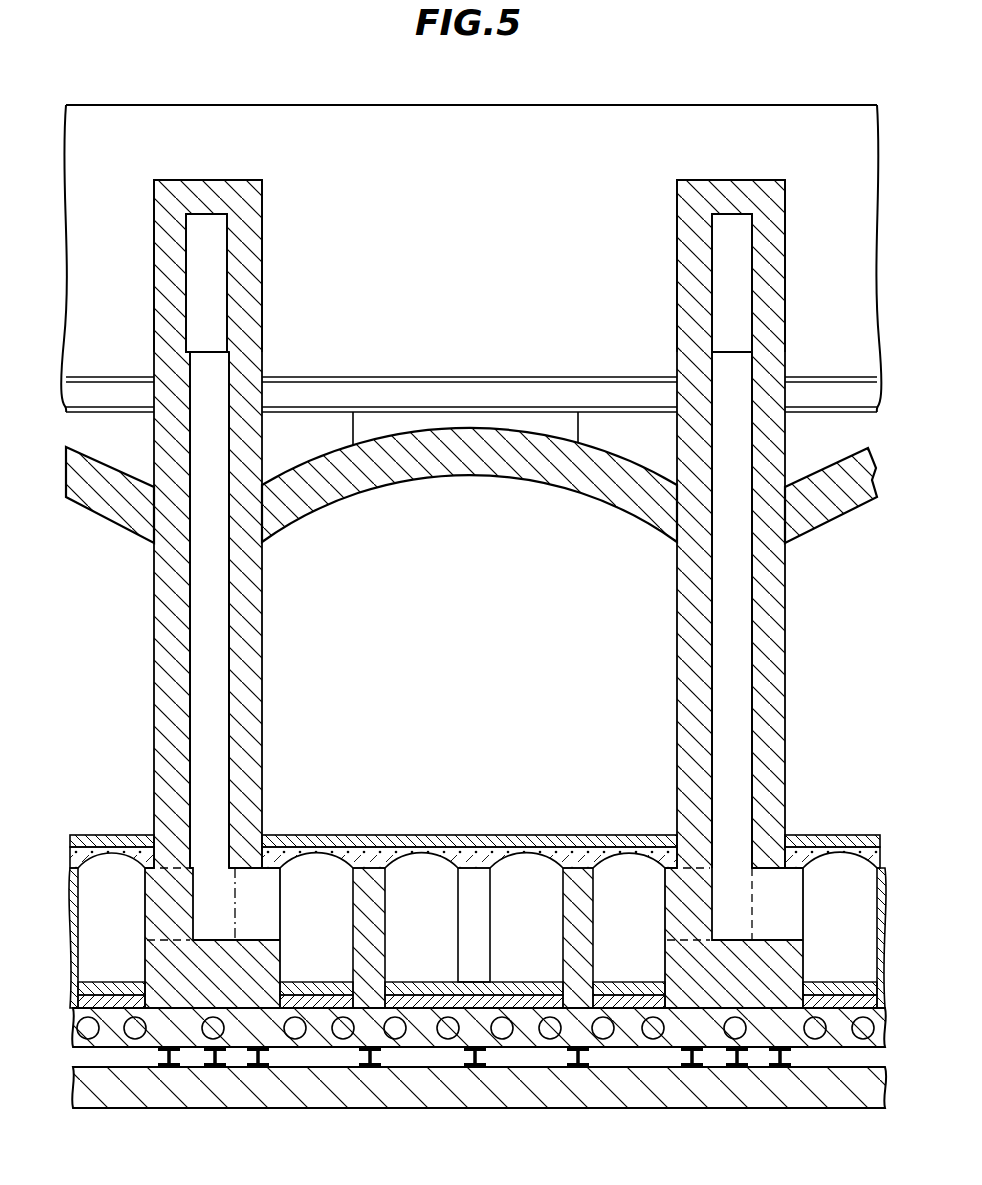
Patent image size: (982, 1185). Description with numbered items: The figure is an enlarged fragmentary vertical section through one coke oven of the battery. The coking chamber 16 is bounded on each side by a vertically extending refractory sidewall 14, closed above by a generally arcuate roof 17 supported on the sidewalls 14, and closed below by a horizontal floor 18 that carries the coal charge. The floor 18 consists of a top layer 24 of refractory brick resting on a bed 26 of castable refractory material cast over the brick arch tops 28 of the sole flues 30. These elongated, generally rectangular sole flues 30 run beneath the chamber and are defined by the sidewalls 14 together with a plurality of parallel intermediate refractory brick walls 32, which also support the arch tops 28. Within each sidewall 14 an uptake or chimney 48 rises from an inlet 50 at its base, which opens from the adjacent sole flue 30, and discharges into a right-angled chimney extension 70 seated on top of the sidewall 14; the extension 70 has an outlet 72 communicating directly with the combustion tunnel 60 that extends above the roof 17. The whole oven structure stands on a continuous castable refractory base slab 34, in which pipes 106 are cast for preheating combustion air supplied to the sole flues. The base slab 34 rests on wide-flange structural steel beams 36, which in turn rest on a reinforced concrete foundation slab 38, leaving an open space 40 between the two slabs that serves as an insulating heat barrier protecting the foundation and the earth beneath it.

The sidewall 14 is at (263, 697).
The coking chamber 16 is at (470, 633).
The roof 17 is at (322, 498).
The floor 18 is at (468, 833).
The top layer 24 is at (418, 835).
The bed 26 is at (488, 852).
The brick arch tops 28 is at (550, 852).
The sole flues 30 is at (441, 955).
The intermediate refractory brick walls 32 is at (382, 908).
The base slab 34 is at (418, 1040).
The structural steel beams 36 is at (365, 1060).
The foundation slab 38 is at (627, 1095).
The space 40 is at (515, 1060).
The uptakes 48 is at (215, 592).
The inlet 50 is at (267, 912).
The combustion tunnel 60 is at (495, 250).
The chimney extension 70 is at (260, 197).
The outlet 72 is at (220, 245).
The pipes 106 is at (337, 1037).